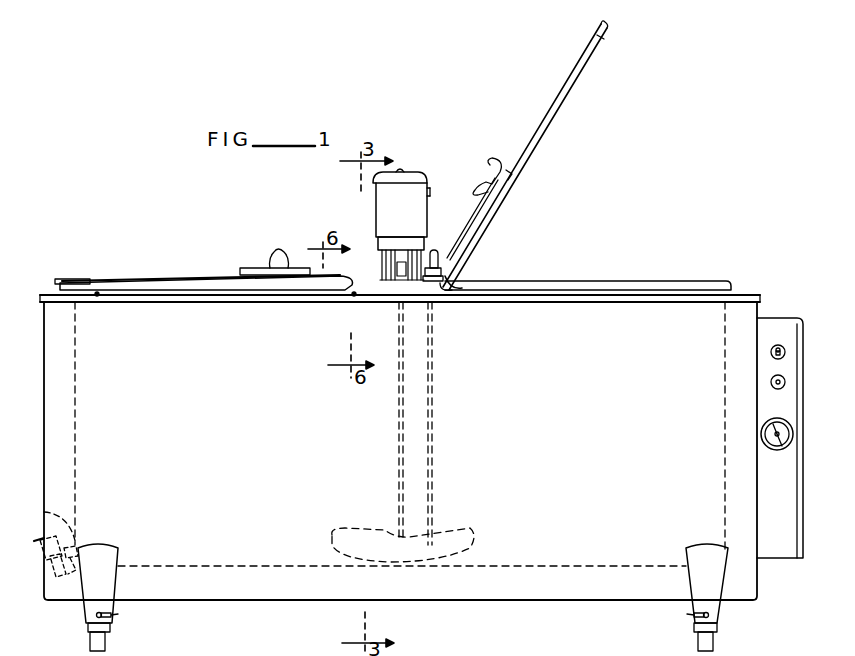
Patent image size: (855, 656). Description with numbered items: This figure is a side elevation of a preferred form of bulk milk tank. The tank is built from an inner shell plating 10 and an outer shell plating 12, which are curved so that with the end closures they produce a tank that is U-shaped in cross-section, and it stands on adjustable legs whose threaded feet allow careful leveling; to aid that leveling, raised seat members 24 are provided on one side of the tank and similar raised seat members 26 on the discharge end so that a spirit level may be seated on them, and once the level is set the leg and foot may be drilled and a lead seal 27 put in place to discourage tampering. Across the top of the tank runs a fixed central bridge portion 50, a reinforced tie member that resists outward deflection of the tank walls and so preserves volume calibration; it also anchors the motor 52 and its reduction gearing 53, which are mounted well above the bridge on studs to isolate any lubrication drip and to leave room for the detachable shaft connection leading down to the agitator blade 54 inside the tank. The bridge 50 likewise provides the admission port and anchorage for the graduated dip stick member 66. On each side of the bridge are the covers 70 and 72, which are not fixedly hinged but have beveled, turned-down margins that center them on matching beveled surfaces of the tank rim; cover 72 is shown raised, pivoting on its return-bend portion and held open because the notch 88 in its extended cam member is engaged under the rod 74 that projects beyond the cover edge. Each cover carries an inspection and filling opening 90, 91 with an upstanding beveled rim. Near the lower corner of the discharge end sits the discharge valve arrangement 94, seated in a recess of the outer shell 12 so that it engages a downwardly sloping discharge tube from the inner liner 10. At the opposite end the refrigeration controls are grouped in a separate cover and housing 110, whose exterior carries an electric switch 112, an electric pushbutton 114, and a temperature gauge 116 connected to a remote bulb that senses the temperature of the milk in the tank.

The inner shell plating 10 is at (105, 506).
The outer shell plating 12 is at (488, 600).
The raised seat member 24 is at (98, 296).
The raised seat member 26 is at (64, 283).
The lead seal 27 is at (107, 618).
The bridge portion 50 is at (368, 284).
The motor 52 is at (422, 210).
The reduction gearing 53 is at (382, 246).
The agitator blade 54 is at (370, 544).
The dip stick member 66 is at (440, 262).
The cover 70 is at (188, 280).
The cover 72 is at (548, 124).
The rod 74 is at (434, 283).
The notch 88 is at (466, 283).
The inspection and filling opening 90 is at (272, 270).
The inspection and filling opening 91 is at (510, 190).
The discharge valve arrangement 94 is at (68, 578).
The cover and housing 110 is at (778, 548).
The electric switch 112 is at (777, 392).
The electric pushbutton 114 is at (780, 345).
The temperature gauge 116 is at (783, 449).